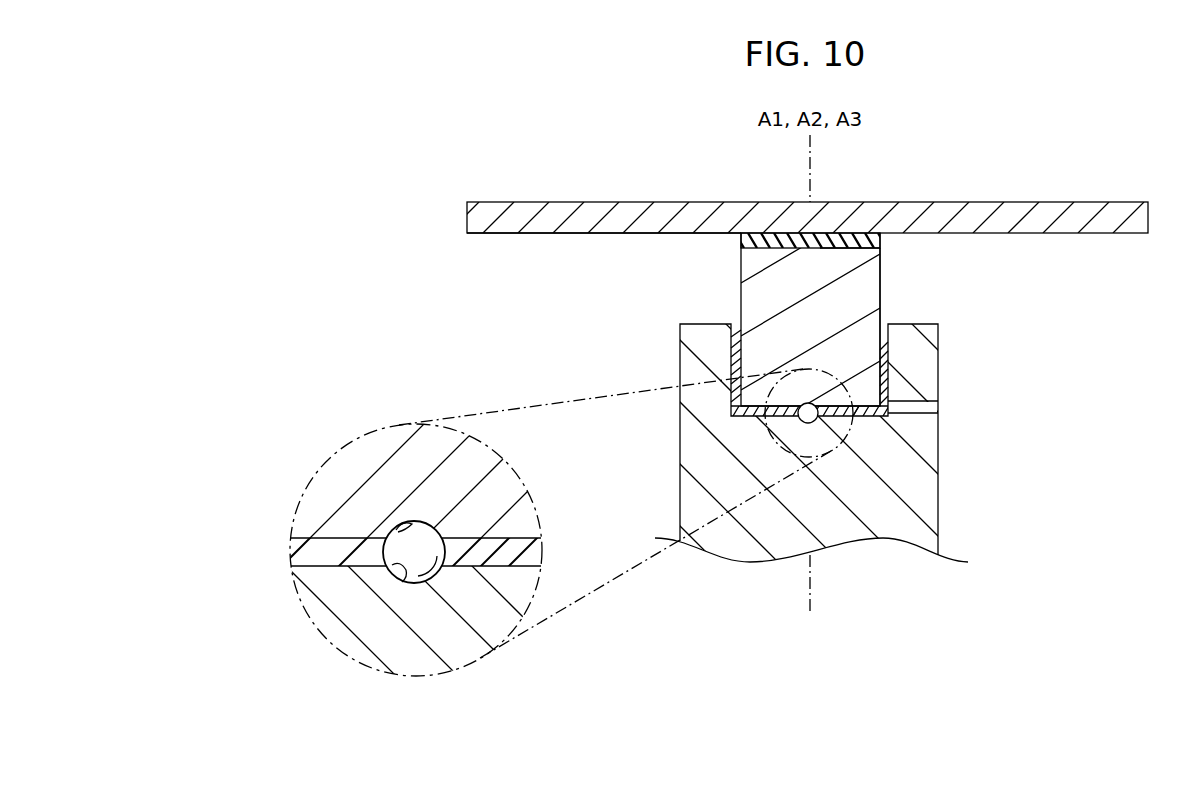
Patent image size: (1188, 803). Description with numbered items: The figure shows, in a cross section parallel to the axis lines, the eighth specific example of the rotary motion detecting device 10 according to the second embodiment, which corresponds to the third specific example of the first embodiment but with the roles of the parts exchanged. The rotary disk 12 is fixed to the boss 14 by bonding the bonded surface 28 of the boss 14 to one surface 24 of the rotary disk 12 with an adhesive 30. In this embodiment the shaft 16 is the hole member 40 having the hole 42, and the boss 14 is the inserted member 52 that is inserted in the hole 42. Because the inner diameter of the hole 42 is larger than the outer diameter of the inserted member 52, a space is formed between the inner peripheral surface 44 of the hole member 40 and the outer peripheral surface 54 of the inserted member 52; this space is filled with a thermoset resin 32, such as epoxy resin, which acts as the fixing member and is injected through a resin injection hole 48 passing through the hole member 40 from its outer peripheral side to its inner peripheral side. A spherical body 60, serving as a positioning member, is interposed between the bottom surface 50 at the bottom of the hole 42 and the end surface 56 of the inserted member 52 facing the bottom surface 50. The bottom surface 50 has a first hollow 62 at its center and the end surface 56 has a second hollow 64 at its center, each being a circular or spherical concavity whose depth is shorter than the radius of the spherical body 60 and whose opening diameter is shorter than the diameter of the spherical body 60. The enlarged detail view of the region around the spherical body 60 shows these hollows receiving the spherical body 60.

The rotary motion detecting device 10 is at (573, 109).
The rotary disk 12 is at (1040, 216).
The boss 14 is at (514, 423).
The shaft 16 is at (654, 503).
The one surface of the rotary disk 24 is at (538, 235).
The bonded surface 28 is at (771, 242).
The adhesive 30 is at (857, 242).
The thermoset resin 32 is at (890, 363).
The hole member 40 is at (698, 464).
The hole 42 is at (739, 324).
The inner peripheral surface 44 is at (884, 343).
The resin injection hole 48 is at (926, 407).
The bottom surface 50 is at (757, 405).
The inserted member 52 is at (765, 273).
The outer peripheral surface 54 is at (881, 268).
The end surface 56 is at (864, 409).
The spherical body 60 is at (808, 404).
The first hollow 62 is at (402, 528).
The second hollow 64 is at (408, 570).